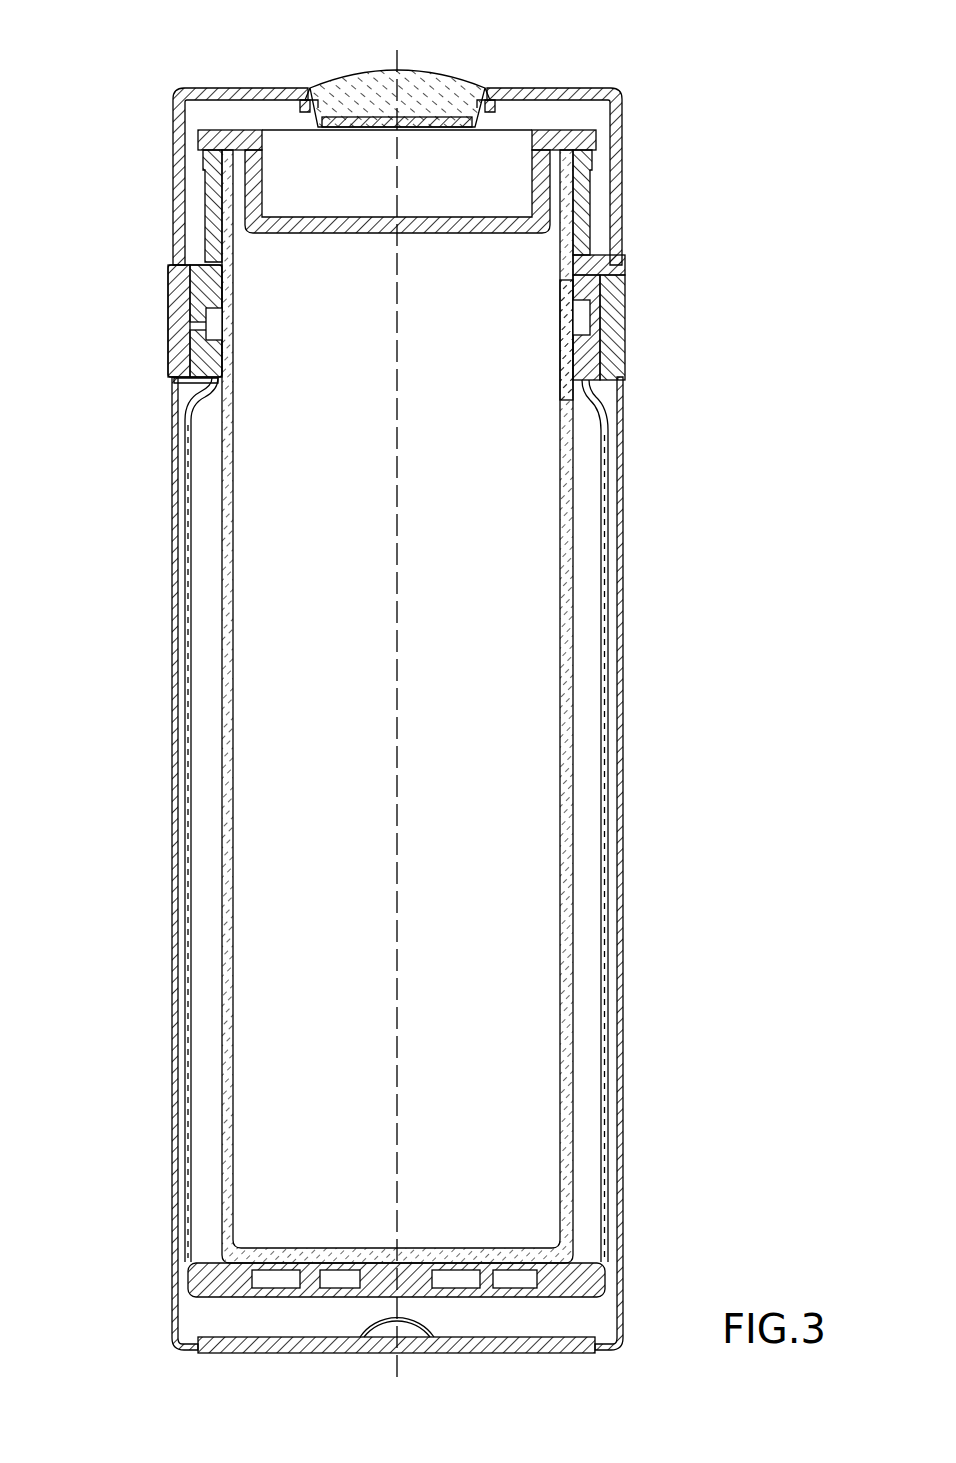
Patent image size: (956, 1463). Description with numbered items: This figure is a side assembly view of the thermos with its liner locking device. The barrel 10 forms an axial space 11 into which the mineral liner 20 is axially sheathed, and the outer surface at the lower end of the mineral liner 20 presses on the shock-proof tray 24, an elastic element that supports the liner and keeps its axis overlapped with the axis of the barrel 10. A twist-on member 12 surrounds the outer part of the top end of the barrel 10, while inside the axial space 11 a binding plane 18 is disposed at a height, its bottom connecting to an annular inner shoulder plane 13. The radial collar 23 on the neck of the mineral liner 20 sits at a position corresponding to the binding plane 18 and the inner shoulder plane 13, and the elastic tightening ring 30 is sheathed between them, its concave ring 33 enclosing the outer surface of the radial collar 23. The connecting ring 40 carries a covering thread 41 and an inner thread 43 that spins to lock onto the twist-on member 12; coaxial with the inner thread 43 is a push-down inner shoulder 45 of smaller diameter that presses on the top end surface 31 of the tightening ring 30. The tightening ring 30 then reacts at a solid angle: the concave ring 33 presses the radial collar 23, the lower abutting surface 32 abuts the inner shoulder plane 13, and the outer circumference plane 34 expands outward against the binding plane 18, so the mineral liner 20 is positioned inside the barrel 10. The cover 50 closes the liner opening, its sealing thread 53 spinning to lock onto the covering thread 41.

The barrel 10 is at (655, 586).
The axial space 11 is at (589, 752).
The twist-on member 12 is at (625, 341).
The inner shoulder plane 13 is at (202, 384).
The binding plane 18 is at (592, 318).
The mineral liner 20 is at (216, 741).
The radial collar 23 is at (170, 352).
The shock-proof tray 24 is at (585, 1268).
The tightening ring 30 is at (186, 309).
The top end surface 31 is at (218, 290).
The lower abutting surface 32 is at (222, 368).
The concave ring 33 is at (172, 313).
The outer circumference plane 34 is at (628, 270).
The connecting ring 40 is at (677, 311).
The covering thread 41 is at (578, 248).
The inner thread 43 is at (625, 322).
The push-down inner shoulder 45 is at (196, 252).
The cover 50 is at (538, 88).
The sealing thread 53 is at (596, 232).